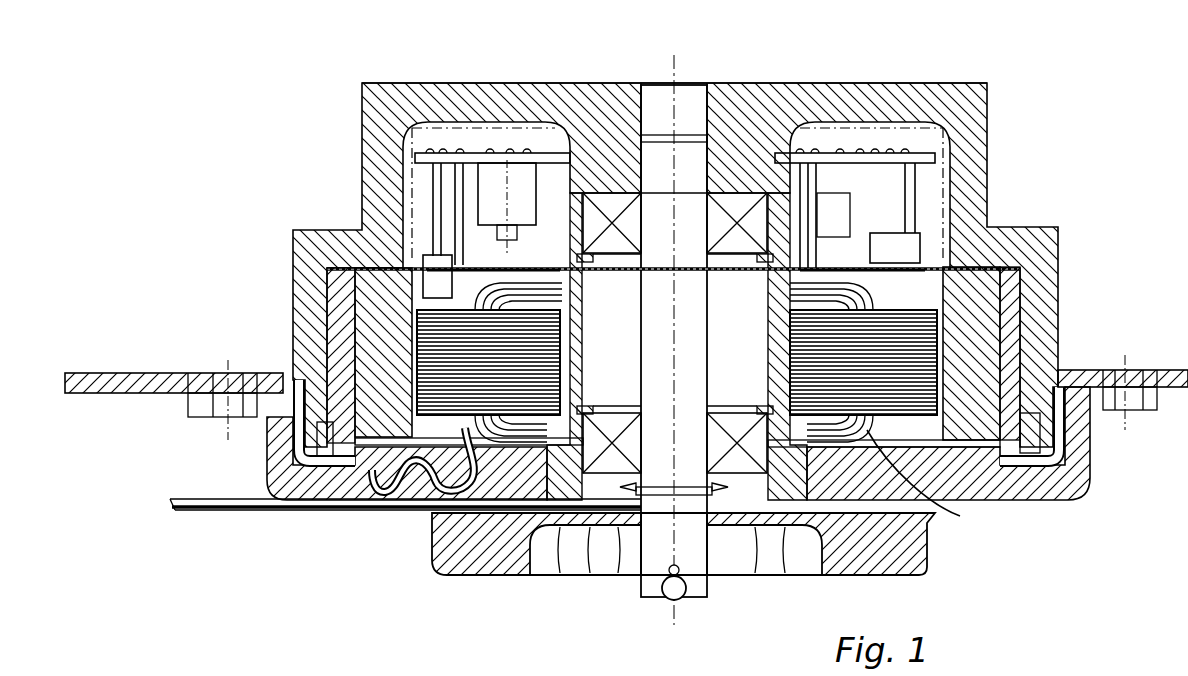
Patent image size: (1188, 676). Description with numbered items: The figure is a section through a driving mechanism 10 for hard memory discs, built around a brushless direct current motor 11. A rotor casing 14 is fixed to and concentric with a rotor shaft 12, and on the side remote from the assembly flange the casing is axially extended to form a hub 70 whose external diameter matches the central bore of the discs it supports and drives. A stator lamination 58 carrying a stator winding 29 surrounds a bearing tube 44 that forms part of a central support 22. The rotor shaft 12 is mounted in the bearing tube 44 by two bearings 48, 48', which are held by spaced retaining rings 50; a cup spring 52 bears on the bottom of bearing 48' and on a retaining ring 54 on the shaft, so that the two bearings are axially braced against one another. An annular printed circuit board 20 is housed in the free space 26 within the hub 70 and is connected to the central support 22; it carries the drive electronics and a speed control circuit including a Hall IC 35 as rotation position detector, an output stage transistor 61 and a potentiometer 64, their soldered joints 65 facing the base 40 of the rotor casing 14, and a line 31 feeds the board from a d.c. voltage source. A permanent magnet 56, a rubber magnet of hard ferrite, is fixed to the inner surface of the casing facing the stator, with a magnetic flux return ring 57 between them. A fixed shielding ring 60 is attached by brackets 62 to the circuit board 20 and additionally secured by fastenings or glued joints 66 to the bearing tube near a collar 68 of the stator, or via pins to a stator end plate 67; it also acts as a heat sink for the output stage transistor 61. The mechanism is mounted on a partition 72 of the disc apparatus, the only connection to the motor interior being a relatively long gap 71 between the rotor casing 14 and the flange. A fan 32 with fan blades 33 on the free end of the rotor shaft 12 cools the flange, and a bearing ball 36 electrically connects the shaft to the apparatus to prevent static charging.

The driving mechanism 10 is at (1070, 238).
The brushless direct current motor 11 is at (1062, 284).
The rotor shaft 12 is at (690, 86).
The rotor casing 14 is at (1042, 330).
The printed circuit board 20 is at (921, 160).
The central support 22 is at (583, 128).
The free space 26 is at (423, 196).
The stator winding 29 is at (927, 479).
The line 31 is at (228, 500).
The fan 32 is at (428, 572).
The fan blades 33 is at (494, 568).
The Hall IC 35 is at (345, 290).
The bearing ball 36 is at (668, 602).
The base 40 is at (487, 83).
The bearing tube 44 is at (772, 200).
The bearing 48 is at (676, 207).
The bearing 48' is at (675, 412).
The retaining rings 50 is at (590, 263).
The cup spring 52 is at (728, 489).
The retaining ring 54 is at (627, 489).
The permanent magnet 56 is at (987, 264).
The magnetic flux return ring 57 is at (343, 427).
The stator lamination 58 is at (430, 342).
The shielding ring 60 is at (463, 272).
The output stage transistor 61 is at (900, 243).
The brackets 62 is at (848, 145).
The potentiometer 64 is at (514, 194).
The soldered joints 65 is at (508, 146).
The fastenings or glued joints 66 is at (557, 270).
The end plate 67 is at (900, 310).
The collar 68 is at (780, 270).
The hub 70 is at (985, 126).
The gap 71 is at (1067, 440).
The partition 72 is at (136, 373).